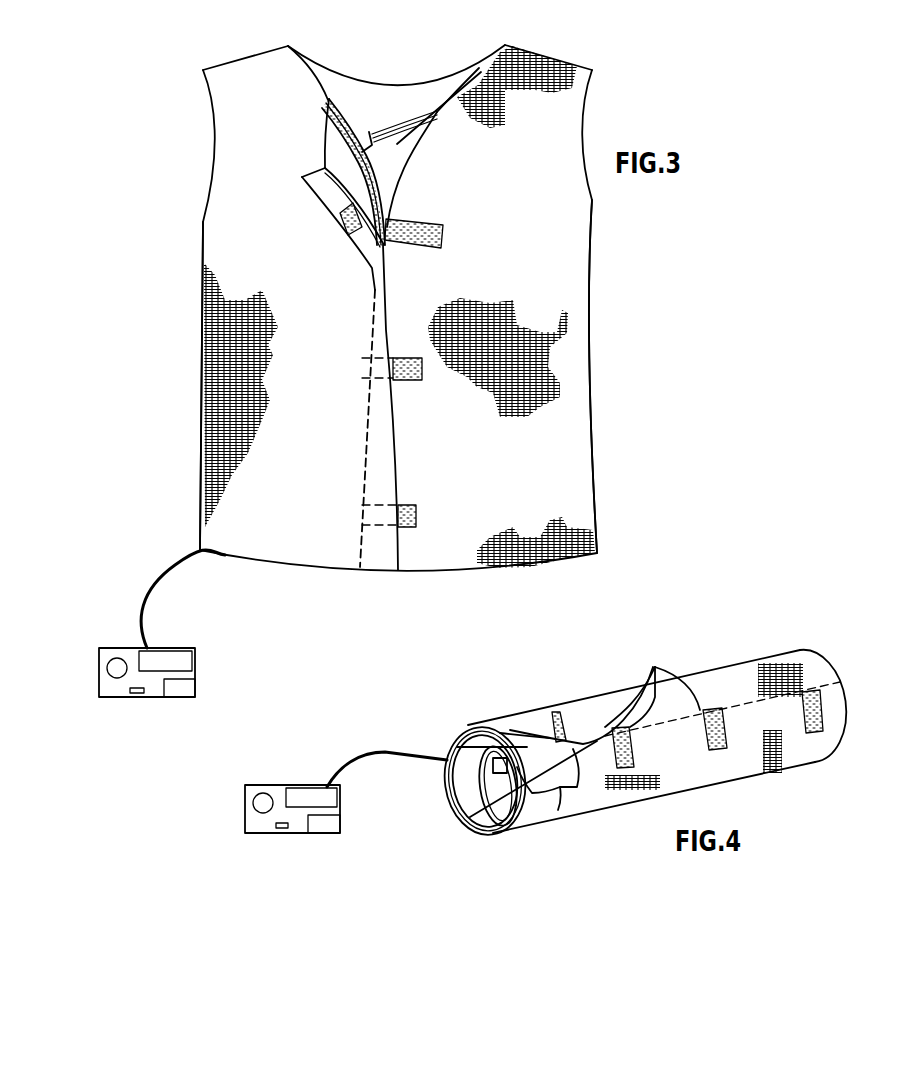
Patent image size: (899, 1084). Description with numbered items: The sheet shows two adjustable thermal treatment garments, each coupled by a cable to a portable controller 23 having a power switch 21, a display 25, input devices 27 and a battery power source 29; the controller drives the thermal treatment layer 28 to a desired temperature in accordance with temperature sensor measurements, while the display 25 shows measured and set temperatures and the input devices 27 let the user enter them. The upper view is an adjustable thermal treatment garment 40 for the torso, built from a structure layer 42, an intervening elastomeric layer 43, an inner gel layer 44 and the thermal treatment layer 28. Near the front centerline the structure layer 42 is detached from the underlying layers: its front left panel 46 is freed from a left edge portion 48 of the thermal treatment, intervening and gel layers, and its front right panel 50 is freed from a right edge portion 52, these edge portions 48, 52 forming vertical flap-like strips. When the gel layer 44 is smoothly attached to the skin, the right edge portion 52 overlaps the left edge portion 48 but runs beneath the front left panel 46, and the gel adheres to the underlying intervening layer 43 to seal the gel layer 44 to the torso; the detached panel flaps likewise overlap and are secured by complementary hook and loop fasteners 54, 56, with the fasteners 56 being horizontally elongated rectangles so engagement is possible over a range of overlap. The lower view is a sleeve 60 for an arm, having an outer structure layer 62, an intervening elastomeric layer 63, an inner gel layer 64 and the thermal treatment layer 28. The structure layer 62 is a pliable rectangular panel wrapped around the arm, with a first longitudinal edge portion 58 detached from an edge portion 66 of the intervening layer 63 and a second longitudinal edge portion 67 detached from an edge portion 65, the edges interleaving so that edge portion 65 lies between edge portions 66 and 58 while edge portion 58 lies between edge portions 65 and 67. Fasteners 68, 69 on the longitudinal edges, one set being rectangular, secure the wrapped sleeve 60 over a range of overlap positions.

In FIG. 3, the adjustable thermal treatment garment 40 is at (640, 78).
In FIG. 3, the power switch 21 is at (108, 667).
In FIG. 4, the power switch 21 is at (254, 802).
In FIG. 3, the controller 23 is at (139, 645).
In FIG. 4, the controller 23 is at (278, 803).
In FIG. 3, the display 25 is at (177, 657).
In FIG. 4, the display 25 is at (292, 793).
In FIG. 3, the input devices 27 is at (142, 697).
In FIG. 4, the input devices 27 is at (283, 833).
In FIG. 3, the power source 29 is at (180, 692).
In FIG. 4, the power source 29 is at (325, 826).
In FIG. 3, the thermal treatment layer 28 is at (327, 107).
In FIG. 4, the thermal treatment layer 28 is at (508, 773).
In FIG. 3, the structure layer 42 is at (317, 185).
In FIG. 3, the intervening elastomeric layer 43 is at (323, 147).
In FIG. 3, the inner gel layer 44 is at (372, 143).
In FIG. 3, the front left panel 46 is at (577, 255).
In FIG. 3, the edge portion 48 is at (427, 107).
In FIG. 3, the front right panel 50 is at (220, 240).
In FIG. 3, the edge portion 52 is at (372, 237).
In FIG. 3, the adjustable fasteners 54 is at (343, 223).
In FIG. 3, the adjustable fasteners 56 is at (443, 237).
In FIG. 4, the first longitudinal edge portion 58 is at (560, 790).
In FIG. 4, the sleeve 60 is at (855, 670).
In FIG. 4, the outer structure layer 62 is at (530, 735).
In FIG. 4, the intervening elastomeric layer 63 is at (528, 795).
In FIG. 4, the inner gel layer 64 is at (497, 783).
In FIG. 4, the edge portion 65 is at (452, 742).
In FIG. 4, the edge portion 66 is at (470, 783).
In FIG. 4, the second longitudinal edge portion 67 is at (545, 727).
In FIG. 4, the fasteners 68 is at (655, 668).
In FIG. 4, the fasteners 69 is at (635, 750).